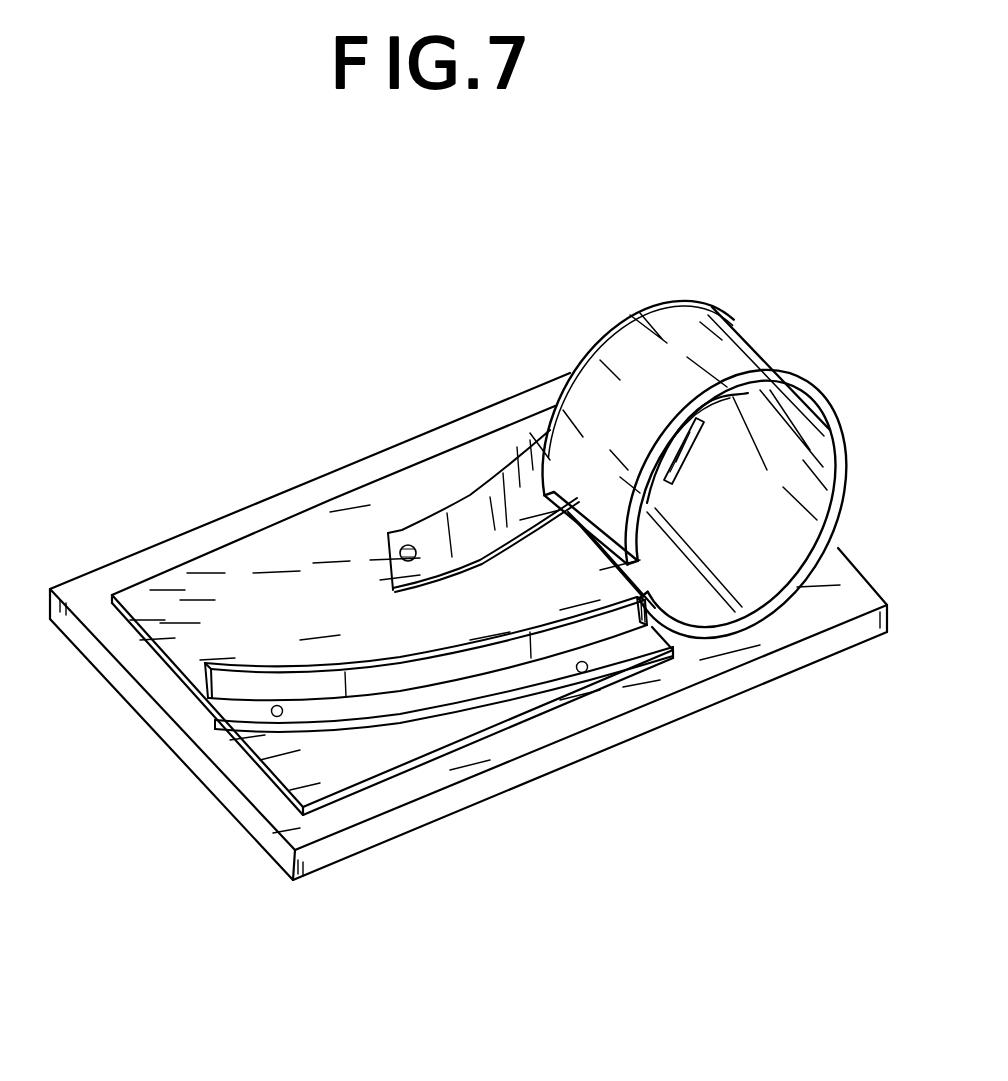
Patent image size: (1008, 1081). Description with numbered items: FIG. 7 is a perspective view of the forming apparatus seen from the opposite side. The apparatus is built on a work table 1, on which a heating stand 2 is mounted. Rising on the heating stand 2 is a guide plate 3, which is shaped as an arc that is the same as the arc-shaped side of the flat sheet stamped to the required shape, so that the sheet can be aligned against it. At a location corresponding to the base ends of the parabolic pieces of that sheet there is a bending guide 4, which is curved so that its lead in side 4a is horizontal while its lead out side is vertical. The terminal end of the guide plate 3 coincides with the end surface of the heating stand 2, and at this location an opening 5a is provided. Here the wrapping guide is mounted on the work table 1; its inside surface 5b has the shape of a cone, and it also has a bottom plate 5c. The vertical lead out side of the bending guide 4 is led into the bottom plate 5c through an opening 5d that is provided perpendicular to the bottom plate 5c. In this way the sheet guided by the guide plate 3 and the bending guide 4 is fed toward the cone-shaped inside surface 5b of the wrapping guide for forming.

The work table 1 is at (793, 625).
The heating stand 2 is at (293, 757).
The guide plate 3 is at (445, 697).
The bending guide 4 is at (493, 490).
The lead in side 4a is at (418, 532).
The opening 5a is at (600, 547).
The inside surface 5b is at (805, 462).
The bottom plate 5c is at (717, 423).
The opening 5d is at (688, 470).